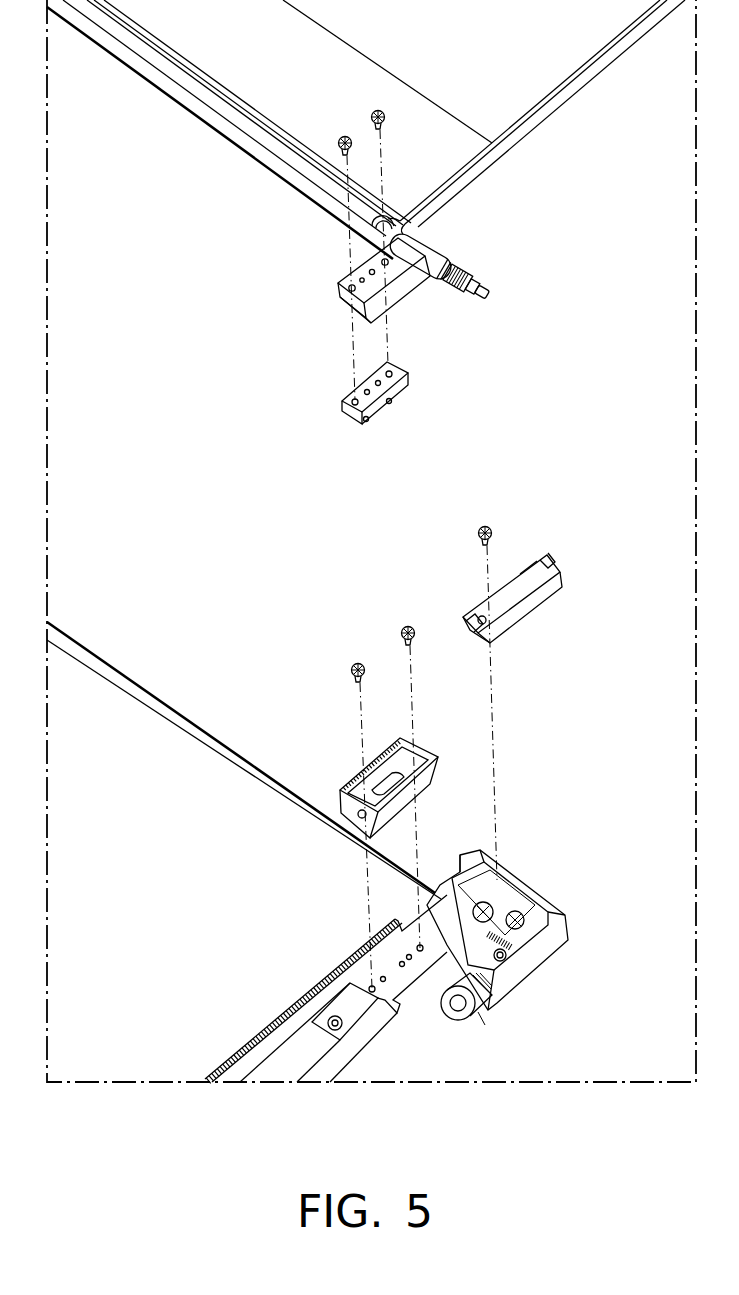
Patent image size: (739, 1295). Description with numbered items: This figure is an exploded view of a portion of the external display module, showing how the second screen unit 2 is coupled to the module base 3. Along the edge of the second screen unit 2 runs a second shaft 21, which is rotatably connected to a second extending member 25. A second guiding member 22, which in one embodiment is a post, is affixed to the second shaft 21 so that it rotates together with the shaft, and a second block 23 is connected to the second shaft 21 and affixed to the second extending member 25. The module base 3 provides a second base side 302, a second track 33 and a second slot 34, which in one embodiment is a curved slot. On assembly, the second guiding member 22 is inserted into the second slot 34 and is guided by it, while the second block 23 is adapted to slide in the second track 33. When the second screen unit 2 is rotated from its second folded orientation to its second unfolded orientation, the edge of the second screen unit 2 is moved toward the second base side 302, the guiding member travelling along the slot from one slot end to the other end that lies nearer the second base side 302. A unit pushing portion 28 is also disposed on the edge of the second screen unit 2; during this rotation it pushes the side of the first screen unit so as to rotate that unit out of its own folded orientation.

The second screen unit 2 is at (556, 110).
The unit pushing portion 28 is at (220, 98).
The second shaft 21 is at (458, 263).
The second guiding member 22 is at (490, 294).
The second extending member 25 is at (388, 272).
The second block 23 is at (344, 418).
The second base side 302 is at (243, 757).
The second slot 34 is at (560, 568).
The second track 33 is at (425, 783).
The module base 3 is at (365, 1057).